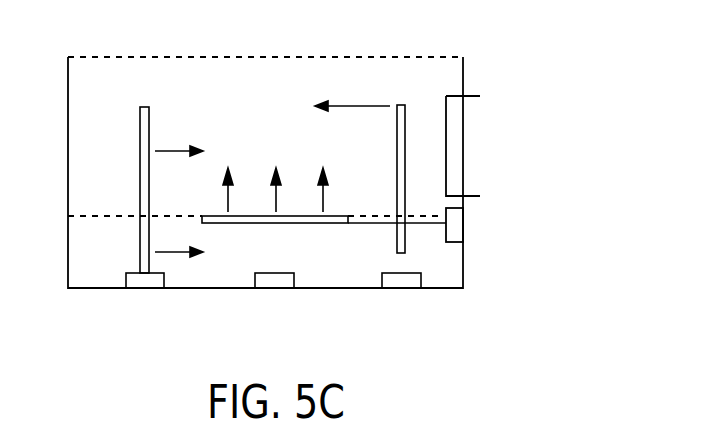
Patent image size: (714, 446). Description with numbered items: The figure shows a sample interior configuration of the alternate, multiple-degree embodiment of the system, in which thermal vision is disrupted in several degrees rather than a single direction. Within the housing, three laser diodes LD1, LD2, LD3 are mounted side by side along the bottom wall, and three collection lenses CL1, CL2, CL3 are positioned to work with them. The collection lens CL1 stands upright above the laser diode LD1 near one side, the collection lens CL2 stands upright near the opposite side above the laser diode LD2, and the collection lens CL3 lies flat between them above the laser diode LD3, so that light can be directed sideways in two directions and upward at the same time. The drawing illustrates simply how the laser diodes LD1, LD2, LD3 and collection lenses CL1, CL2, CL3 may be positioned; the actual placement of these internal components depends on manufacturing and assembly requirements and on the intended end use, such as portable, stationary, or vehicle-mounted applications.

The collection lens CL1 is at (151, 107).
The collection lens CL2 is at (406, 116).
The collection lens CL3 is at (202, 224).
The laser diode LD1 is at (145, 283).
The laser diode LD2 is at (402, 283).
The laser diode LD3 is at (275, 283).